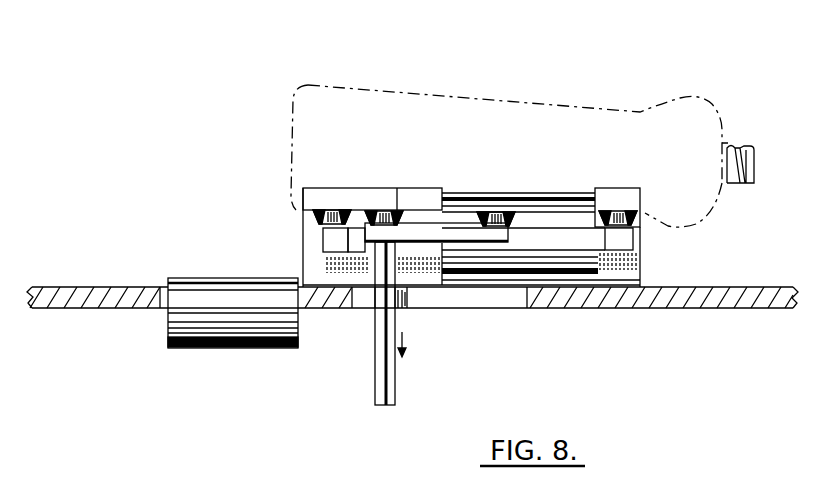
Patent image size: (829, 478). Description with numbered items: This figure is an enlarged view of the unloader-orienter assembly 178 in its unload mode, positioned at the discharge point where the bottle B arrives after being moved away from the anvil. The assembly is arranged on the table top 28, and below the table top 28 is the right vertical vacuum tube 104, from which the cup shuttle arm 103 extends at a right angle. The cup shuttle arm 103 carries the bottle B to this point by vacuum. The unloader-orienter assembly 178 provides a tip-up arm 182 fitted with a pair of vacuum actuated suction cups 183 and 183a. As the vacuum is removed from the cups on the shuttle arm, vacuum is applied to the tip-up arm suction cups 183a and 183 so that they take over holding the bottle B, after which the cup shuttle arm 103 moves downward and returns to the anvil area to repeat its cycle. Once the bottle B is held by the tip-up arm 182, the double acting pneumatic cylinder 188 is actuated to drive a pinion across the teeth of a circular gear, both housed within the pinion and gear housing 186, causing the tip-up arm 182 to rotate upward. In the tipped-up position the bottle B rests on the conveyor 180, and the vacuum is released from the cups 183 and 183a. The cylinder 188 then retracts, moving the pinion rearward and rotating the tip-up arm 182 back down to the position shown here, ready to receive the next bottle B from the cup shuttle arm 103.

The bottle B is at (437, 105).
The unloader-orienter assembly 178 is at (285, 108).
The tip-up arm suction cup 183a is at (316, 223).
The tip-up arm suction cup 183 is at (622, 203).
The cup shuttle arm 103 is at (423, 234).
The pinion and gear housing 186 is at (316, 255).
The tip-up arm 182 is at (587, 238).
The double acting pneumatic cylinder 188 is at (627, 277).
The table top 28 is at (695, 293).
The conveyor 180 is at (230, 318).
The right vertical vacuum tube 104 is at (382, 367).